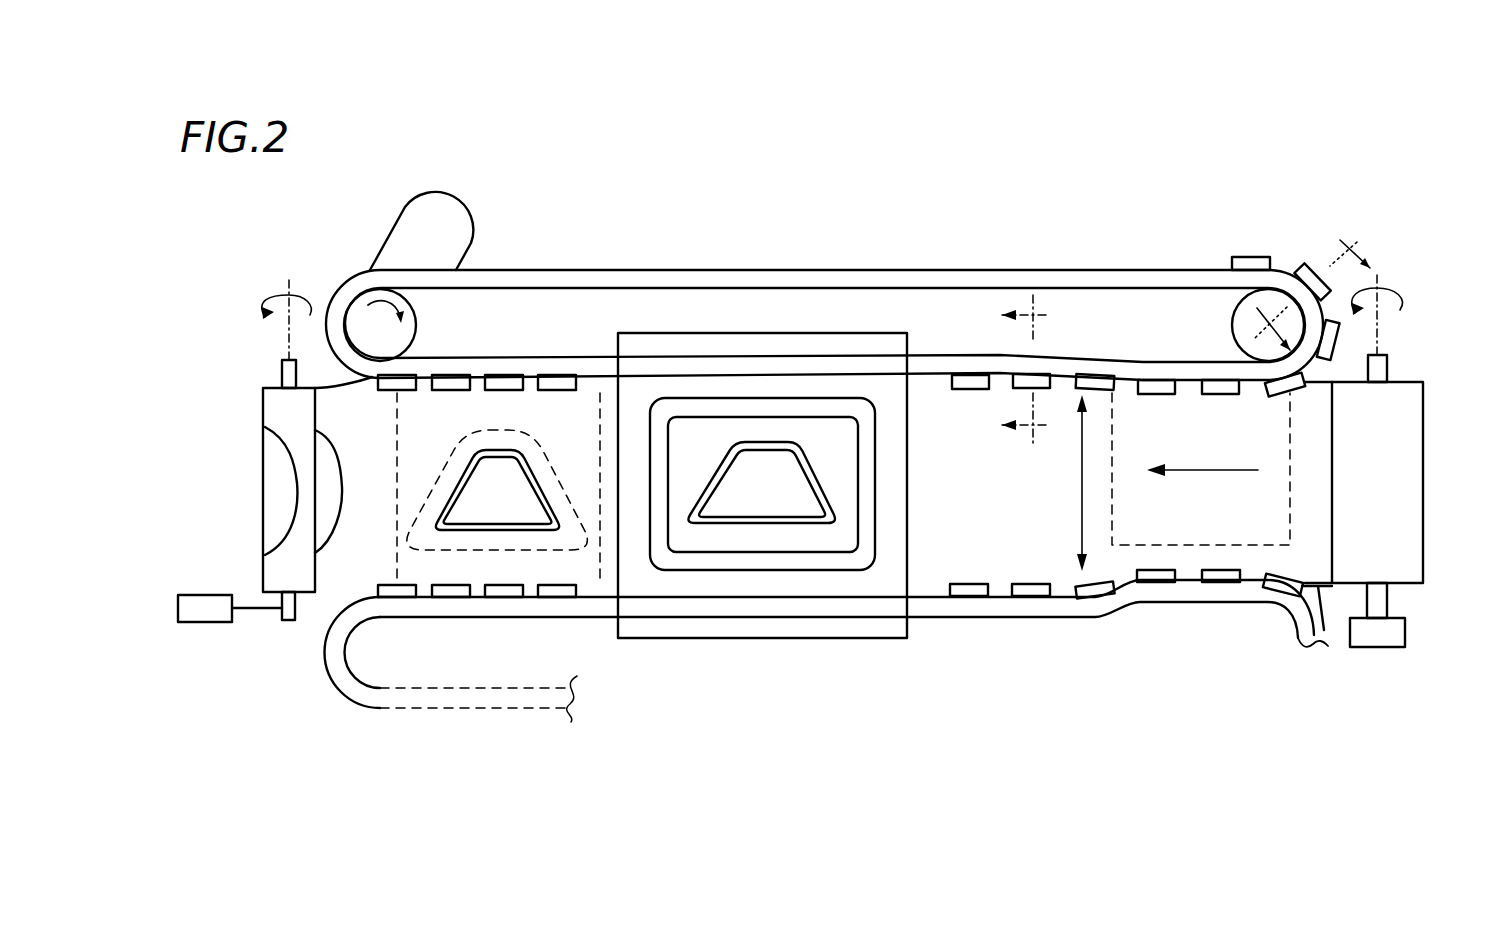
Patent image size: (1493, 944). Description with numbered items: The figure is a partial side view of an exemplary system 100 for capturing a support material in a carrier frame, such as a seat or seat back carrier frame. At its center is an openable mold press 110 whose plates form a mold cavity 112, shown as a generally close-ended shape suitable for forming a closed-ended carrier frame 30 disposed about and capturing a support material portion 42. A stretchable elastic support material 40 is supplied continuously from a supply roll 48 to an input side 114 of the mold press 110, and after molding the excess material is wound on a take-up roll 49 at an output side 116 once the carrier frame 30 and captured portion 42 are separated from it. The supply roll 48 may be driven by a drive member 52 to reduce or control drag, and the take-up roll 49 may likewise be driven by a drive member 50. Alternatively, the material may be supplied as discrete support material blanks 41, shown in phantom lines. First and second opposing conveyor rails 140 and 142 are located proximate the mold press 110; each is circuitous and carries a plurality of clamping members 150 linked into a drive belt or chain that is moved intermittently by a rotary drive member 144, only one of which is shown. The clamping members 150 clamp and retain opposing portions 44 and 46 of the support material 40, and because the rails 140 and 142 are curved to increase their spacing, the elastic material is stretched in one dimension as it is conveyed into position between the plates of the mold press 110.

The system 100 is at (1375, 182).
The openable mold press 110 is at (757, 320).
The mold cavity 112 is at (690, 522).
The input side 114 is at (908, 427).
The output side 116 is at (618, 442).
The first conveyor rail 140 is at (1097, 356).
The second conveyor rail 142 is at (1000, 628).
The rotary drive member 144 is at (440, 210).
The clamping members 150 is at (1248, 257).
The carrier frame 30 is at (435, 526).
The support material 40 is at (1004, 531).
The support material blanks 41 is at (1228, 449).
The support material portion 42 is at (527, 513).
The first opposing portion of the support material 44 is at (1320, 380).
The second opposing portion of the support material 46 is at (1322, 610).
The supply roll 48 is at (1423, 530).
The take-up roll 49 is at (263, 477).
The drive member 50 is at (212, 623).
The drive member 52 is at (1405, 628).